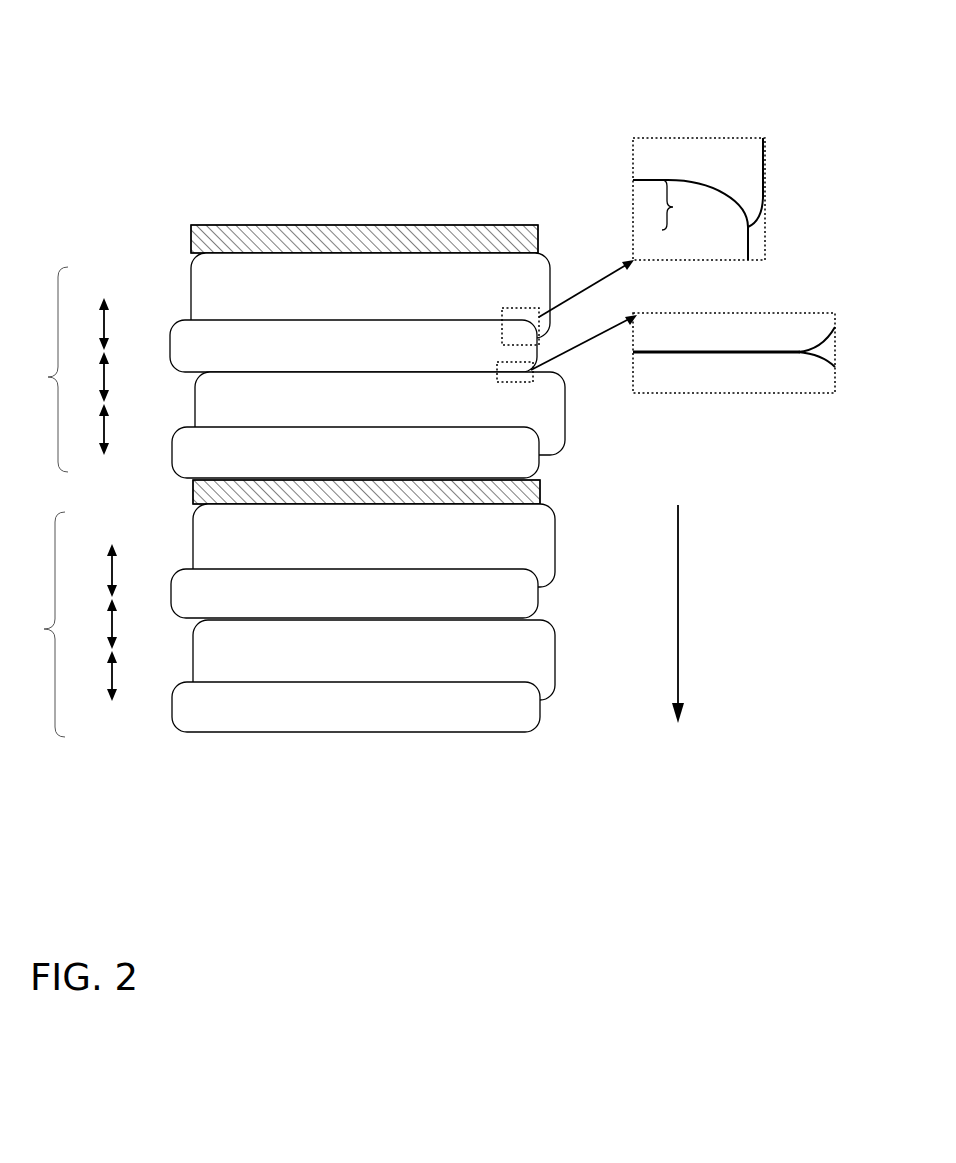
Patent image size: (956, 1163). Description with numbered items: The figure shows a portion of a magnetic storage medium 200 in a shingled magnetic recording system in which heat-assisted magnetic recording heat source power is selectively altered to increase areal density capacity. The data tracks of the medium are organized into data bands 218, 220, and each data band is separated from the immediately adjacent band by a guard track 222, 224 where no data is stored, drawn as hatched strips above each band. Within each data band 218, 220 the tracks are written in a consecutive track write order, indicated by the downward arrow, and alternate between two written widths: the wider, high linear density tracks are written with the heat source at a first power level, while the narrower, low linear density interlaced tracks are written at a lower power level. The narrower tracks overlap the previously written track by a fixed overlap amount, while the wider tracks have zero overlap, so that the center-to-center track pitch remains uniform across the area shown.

The magnetic storage medium 200 is at (131, 37).
The data band 218 is at (88, 369).
The data band 220 is at (88, 624).
The guard track 222 is at (383, 250).
The guard track 224 is at (383, 502).